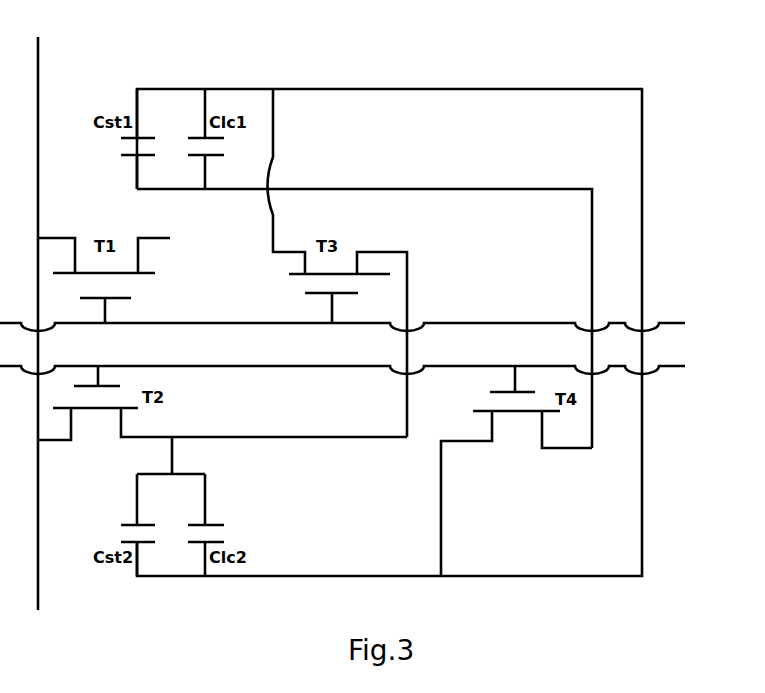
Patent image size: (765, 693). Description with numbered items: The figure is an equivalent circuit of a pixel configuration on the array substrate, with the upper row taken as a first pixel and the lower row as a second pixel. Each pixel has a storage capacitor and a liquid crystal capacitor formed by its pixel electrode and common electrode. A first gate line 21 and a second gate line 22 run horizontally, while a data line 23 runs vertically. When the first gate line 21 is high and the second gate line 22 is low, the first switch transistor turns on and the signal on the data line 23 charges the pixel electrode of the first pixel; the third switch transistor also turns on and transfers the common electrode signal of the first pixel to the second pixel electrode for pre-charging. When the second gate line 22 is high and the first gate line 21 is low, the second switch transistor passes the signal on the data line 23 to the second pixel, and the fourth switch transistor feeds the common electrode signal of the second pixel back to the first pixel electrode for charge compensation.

The first gate line 21 is at (668, 324).
The second gate line 22 is at (667, 367).
The data line 23 is at (38, 71).